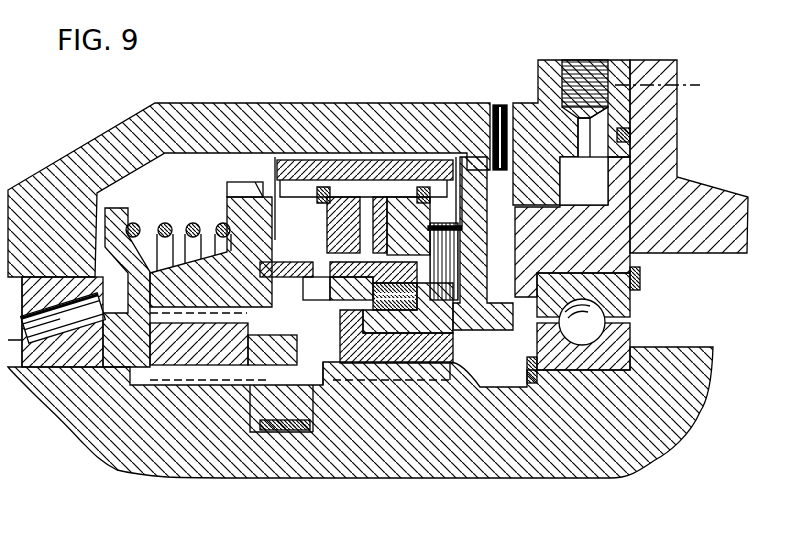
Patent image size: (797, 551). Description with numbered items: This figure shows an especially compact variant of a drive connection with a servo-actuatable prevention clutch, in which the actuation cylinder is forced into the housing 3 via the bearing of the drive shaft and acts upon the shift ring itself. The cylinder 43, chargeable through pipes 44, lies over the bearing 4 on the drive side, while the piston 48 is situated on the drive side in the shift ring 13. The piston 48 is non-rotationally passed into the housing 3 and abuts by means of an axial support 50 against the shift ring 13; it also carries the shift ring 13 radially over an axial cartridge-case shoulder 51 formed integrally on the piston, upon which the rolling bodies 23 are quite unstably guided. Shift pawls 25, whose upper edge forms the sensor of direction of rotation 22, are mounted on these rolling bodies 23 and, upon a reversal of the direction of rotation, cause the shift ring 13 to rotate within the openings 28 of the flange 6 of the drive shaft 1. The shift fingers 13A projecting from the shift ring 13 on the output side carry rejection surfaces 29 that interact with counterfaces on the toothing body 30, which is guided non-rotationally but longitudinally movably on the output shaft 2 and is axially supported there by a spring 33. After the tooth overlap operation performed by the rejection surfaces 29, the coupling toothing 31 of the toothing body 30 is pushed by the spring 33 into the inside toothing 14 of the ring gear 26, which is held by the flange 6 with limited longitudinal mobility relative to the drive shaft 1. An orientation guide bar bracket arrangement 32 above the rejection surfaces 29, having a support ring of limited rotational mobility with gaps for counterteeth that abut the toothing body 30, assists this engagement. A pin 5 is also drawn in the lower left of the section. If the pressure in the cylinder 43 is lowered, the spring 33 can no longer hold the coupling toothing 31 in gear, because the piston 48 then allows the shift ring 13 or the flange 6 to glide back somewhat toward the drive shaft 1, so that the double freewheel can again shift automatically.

The drive shaft 1 is at (648, 415).
The output shaft 2 is at (110, 413).
The housing 3 is at (537, 127).
The bearing 4 is at (587, 327).
The pin 5 is at (43, 370).
The flange 6 is at (367, 175).
The shift ring 13 is at (382, 187).
The shift fingers 13A is at (347, 370).
The inside toothing 14 is at (295, 187).
The sensor of direction of rotation 22 is at (412, 170).
The rolling bodies 23 is at (413, 370).
The shift pawls 25 is at (453, 345).
The ring gear 26 is at (438, 172).
The openings 28 is at (342, 197).
The rejection surfaces 29 is at (313, 290).
The toothing body 30 is at (265, 178).
The coupling toothing 31 is at (243, 190).
The orientation guide bar bracket arrangement 32 is at (315, 257).
The spring 33 is at (163, 223).
The cylinder 43 is at (592, 180).
The pipes 44 is at (582, 120).
The piston 48 is at (540, 188).
The axial support 50 is at (447, 258).
The cartridge-case shoulder 51 is at (373, 363).